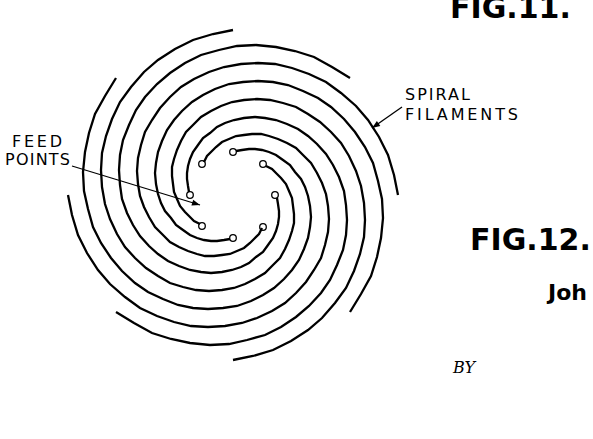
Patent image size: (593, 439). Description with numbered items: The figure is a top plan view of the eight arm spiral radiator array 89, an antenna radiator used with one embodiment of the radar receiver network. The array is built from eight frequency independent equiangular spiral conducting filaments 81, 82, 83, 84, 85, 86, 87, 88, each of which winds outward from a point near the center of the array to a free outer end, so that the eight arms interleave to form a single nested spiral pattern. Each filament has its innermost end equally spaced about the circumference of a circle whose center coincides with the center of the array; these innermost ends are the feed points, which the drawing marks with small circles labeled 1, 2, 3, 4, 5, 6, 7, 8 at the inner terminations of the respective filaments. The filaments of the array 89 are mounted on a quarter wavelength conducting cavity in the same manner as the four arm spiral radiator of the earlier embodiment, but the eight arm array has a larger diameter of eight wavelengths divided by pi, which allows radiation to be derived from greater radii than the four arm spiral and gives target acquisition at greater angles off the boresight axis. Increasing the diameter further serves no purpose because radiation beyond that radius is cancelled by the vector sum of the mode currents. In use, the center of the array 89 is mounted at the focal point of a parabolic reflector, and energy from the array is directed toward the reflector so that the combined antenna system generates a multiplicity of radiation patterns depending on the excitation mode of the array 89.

The feed point 1 is at (238, 158).
The feed point 2 is at (259, 173).
The feed point 3 is at (268, 197).
The feed point 4 is at (257, 219).
The feed point 5 is at (230, 227).
The feed point 6 is at (204, 217).
The feed point 7 is at (196, 192).
The feed point 8 is at (208, 170).
The spiral conducting filament 81 is at (110, 92).
The spiral conducting filament 82 is at (167, 53).
The spiral conducting filament 83 is at (297, 50).
The spiral conducting filament 84 is at (388, 170).
The spiral conducting filament 85 is at (378, 260).
The spiral conducting filament 86 is at (290, 340).
The spiral conducting filament 87 is at (165, 342).
The spiral conducting filament 88 is at (91, 255).
The eight arm spiral radiator array 89 is at (208, 25).